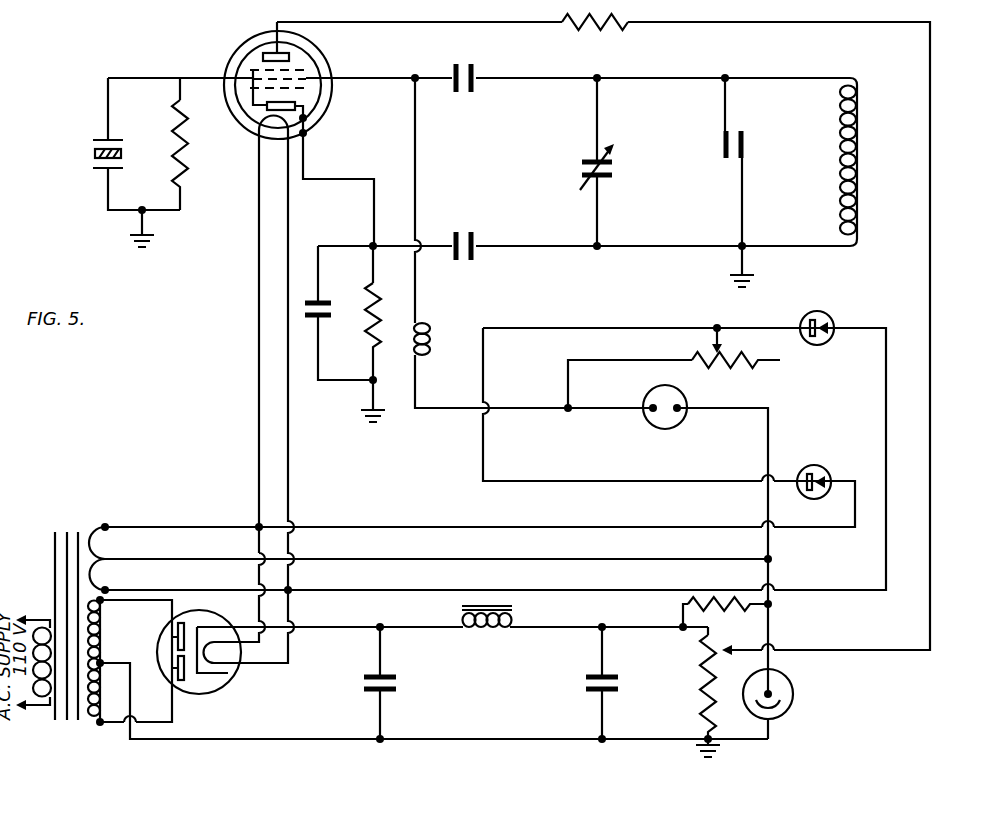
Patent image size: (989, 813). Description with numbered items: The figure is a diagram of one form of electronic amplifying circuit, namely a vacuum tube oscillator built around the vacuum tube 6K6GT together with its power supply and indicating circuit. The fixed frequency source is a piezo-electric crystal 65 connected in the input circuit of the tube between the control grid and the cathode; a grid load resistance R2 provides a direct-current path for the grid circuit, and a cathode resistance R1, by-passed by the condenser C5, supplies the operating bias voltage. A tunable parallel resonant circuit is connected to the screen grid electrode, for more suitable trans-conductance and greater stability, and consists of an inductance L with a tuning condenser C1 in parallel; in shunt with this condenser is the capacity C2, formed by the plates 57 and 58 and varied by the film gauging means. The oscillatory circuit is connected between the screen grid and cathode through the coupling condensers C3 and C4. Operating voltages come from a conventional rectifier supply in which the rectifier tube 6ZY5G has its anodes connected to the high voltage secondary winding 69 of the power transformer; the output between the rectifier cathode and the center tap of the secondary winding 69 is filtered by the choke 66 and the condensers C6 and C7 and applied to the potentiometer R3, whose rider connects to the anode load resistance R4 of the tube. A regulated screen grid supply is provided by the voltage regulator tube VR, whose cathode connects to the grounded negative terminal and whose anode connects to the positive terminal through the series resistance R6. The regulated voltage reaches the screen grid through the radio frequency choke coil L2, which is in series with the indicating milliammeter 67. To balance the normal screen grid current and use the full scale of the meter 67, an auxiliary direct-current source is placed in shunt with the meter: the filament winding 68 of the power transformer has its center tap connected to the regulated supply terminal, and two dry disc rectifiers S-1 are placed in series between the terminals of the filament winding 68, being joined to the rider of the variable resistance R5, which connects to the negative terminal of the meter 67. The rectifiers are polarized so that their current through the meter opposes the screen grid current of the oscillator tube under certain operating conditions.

The piezo-electric crystal 65 is at (84, 160).
The plate 57 is at (720, 143).
The plate 58 is at (746, 150).
The indicating milliammeter 67 is at (682, 421).
The filament winding 68 is at (97, 522).
The high voltage secondary winding 69 is at (104, 643).
The choke 66 is at (488, 630).
The cathode resistance R1 is at (388, 304).
The grid load resistance R2 is at (186, 150).
The potentiometer R3 is at (712, 676).
The anode load resistance R4 is at (600, 32).
The variable resistance R5 is at (736, 369).
The series resistance R6 is at (743, 600).
The tuning condenser C1 is at (606, 180).
The capacity C2 is at (734, 182).
The coupling condenser C3 is at (465, 236).
The coupling condenser C4 is at (465, 96).
The condenser C5 is at (322, 320).
The condenser C6 is at (397, 683).
The condenser C7 is at (584, 683).
The inductance L is at (860, 161).
The radio frequency choke coil L2 is at (533, 243).
The dry disc rectifier S-1 is at (808, 343).
The vacuum tube 6K6GT is at (222, 65).
The rectifier tube 6ZY5G is at (211, 702).
The voltage regulator tube VR is at (806, 694).